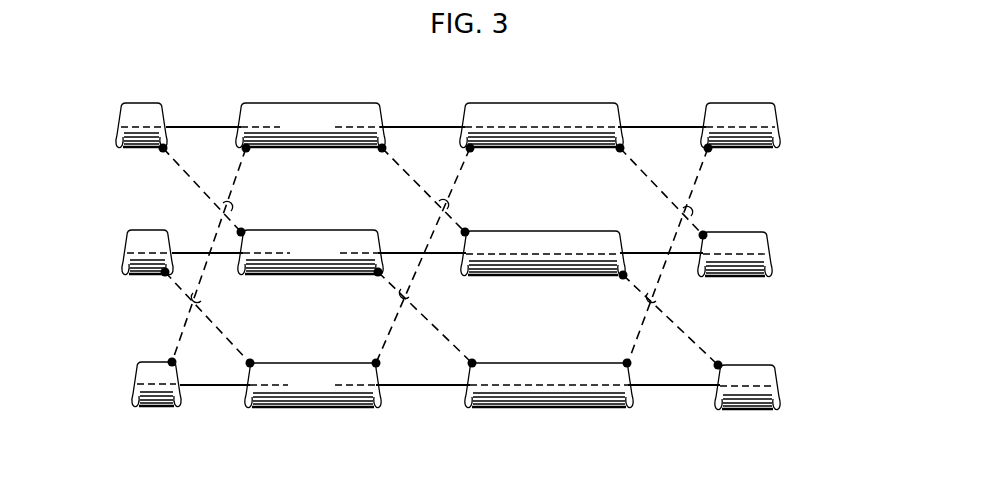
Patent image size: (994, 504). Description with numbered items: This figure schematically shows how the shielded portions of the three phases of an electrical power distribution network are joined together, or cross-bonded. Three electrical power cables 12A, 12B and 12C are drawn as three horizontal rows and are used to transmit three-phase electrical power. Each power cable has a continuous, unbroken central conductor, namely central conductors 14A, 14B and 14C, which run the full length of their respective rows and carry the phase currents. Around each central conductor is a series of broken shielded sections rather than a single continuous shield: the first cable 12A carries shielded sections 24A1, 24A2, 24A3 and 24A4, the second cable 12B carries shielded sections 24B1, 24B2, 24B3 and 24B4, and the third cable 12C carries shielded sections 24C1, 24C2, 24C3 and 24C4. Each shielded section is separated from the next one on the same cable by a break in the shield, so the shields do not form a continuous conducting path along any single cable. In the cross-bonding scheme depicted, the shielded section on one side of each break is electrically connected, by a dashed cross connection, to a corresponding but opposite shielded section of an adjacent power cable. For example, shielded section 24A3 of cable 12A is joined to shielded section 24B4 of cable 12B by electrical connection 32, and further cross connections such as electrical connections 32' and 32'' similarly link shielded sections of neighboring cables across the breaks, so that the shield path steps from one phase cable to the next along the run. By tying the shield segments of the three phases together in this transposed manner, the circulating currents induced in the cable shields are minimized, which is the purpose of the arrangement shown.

The electrical power cable 12A is at (797, 124).
The electrical power cable 12B is at (792, 248).
The electrical power cable 12C is at (790, 380).
The central conductor 14A is at (415, 125).
The central conductor 14B is at (680, 255).
The central conductor 14C is at (440, 388).
The shielded section 24A1 is at (128, 104).
The shielded section 24A2 is at (337, 105).
The shielded section 24A3 is at (533, 112).
The shielded section 24A4 is at (745, 105).
The shielded section 24B1 is at (128, 230).
The shielded section 24B2 is at (335, 232).
The shielded section 24B3 is at (540, 235).
The shielded section 24B4 is at (765, 233).
The shielded section 24C1 is at (158, 406).
The shielded section 24C2 is at (340, 409).
The shielded section 24C3 is at (573, 407).
The shielded section 24C4 is at (775, 411).
The electrical connection 32 is at (651, 191).
The electrical connection 32' is at (681, 256).
The electrical connection 32'' is at (698, 320).